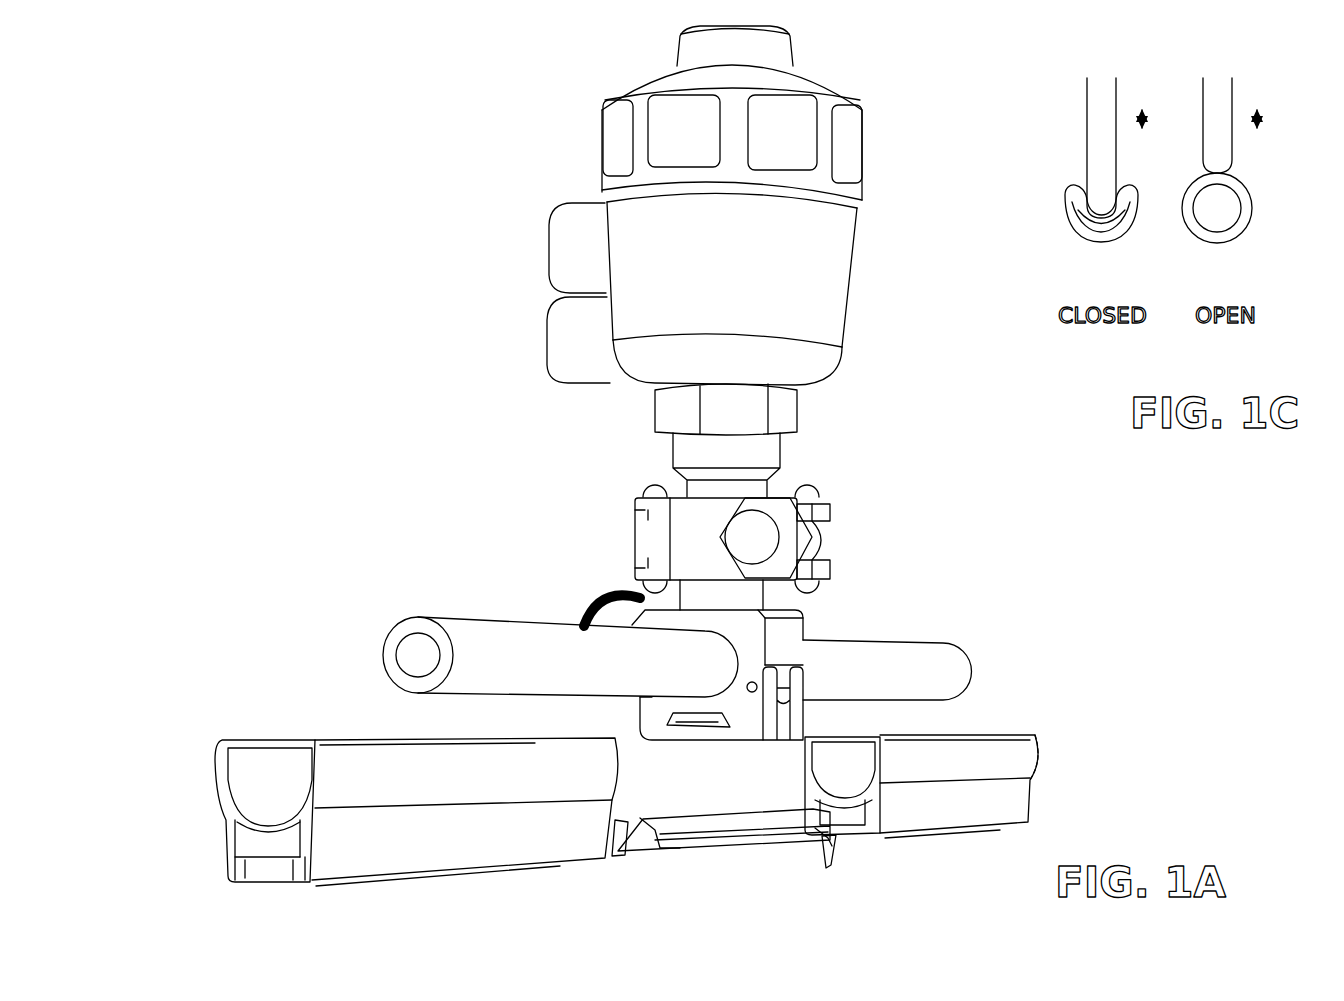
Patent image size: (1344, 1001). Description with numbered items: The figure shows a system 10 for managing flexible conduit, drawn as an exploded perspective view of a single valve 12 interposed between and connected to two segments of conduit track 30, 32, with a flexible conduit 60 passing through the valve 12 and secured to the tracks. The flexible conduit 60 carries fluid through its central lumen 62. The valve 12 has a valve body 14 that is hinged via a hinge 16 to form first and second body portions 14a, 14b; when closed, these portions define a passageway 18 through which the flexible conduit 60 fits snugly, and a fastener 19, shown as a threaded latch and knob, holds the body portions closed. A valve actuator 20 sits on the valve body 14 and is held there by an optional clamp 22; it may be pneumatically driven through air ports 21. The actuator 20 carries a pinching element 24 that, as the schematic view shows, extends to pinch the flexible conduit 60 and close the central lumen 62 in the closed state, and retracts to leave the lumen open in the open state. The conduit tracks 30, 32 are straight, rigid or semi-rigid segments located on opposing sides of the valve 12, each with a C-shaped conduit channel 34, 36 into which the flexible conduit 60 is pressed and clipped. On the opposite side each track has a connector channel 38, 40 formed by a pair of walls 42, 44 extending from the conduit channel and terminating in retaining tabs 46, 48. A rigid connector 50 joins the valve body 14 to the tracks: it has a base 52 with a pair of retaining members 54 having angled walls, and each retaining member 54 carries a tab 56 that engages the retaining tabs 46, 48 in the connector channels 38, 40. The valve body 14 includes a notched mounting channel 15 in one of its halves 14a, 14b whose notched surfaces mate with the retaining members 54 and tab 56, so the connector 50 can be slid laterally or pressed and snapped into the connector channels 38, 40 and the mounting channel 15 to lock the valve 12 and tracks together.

In FIG. 1A, the system 10 is at (283, 501).
In FIG. 1A, the valve 12 is at (470, 401).
In FIG. 1A, the valve body 14 is at (760, 662).
In FIG. 1A, the first body portion 14a is at (787, 638).
In FIG. 1A, the second body portion 14b is at (797, 718).
In FIG. 1A, the mounting channel 15 is at (696, 750).
In FIG. 1A, the hinge 16 is at (752, 693).
In FIG. 1A, the passageway 18 is at (707, 704).
In FIG. 1A, the fastener 19 is at (588, 604).
In FIG. 1A, the valve actuator 20 is at (835, 298).
In FIG. 1A, the air ports 21 is at (552, 241).
In FIG. 1A, the clamp 22 is at (645, 533).
In FIG. 1C, the pinching element 24 is at (1093, 119).
In FIG. 1A, the conduit track 30 is at (458, 880).
In FIG. 1A, the conduit track 32 is at (979, 795).
In FIG. 1A, the conduit channel 34 is at (268, 805).
In FIG. 1A, the conduit channel 36 is at (1020, 742).
In FIG. 1A, the connector channel 38 is at (270, 899).
In FIG. 1A, the connector channel 40 is at (924, 825).
In FIG. 1A, the walls 42 is at (236, 838).
In FIG. 1A, the walls 44 is at (813, 795).
In FIG. 1A, the retaining tab 46 is at (245, 885).
In FIG. 1A, the retaining tab 48 is at (833, 870).
In FIG. 1A, the connector 50 is at (704, 853).
In FIG. 1A, the base 52 is at (665, 855).
In FIG. 1A, the retaining members 54 is at (620, 862).
In FIG. 1A, the tab 56 is at (680, 827).
In FIG. 1A, the flexible conduit 60 is at (636, 634).
In FIG. 1C, the flexible conduit 60 is at (1164, 204).
In FIG. 1A, the central lumen 62 is at (407, 657).
In FIG. 1C, the central lumen 62 is at (1123, 221).